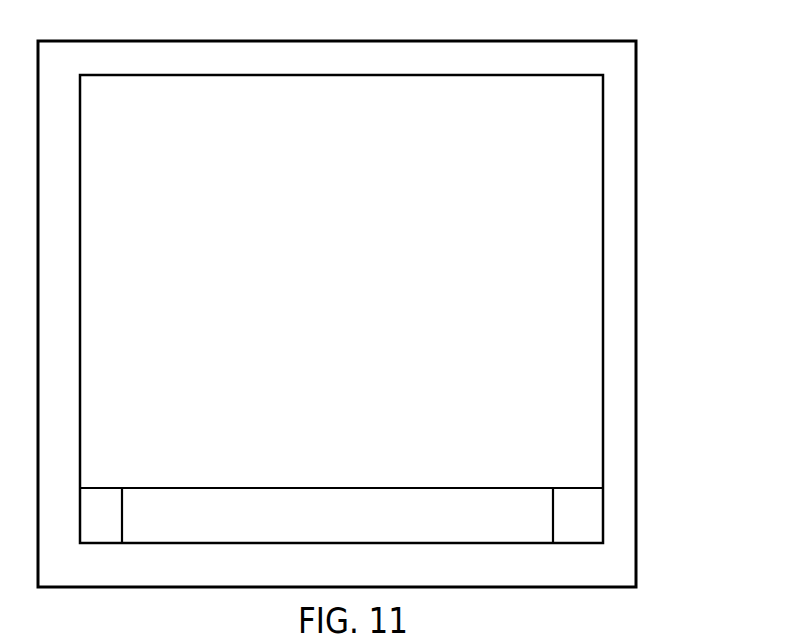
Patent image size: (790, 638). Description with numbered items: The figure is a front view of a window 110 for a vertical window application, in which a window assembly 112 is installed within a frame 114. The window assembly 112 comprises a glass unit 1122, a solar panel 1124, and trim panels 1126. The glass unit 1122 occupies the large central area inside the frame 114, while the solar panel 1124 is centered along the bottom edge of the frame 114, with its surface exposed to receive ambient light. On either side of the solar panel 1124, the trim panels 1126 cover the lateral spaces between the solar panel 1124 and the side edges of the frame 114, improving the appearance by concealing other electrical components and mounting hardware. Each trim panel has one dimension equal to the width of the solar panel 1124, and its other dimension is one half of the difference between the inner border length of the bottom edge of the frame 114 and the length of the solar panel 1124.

The window 110 is at (672, 45).
The window assembly 112 is at (602, 202).
The frame 114 is at (627, 356).
The glass unit 1122 is at (384, 309).
The solar panel 1124 is at (283, 508).
The trim panels 1126 is at (100, 500).